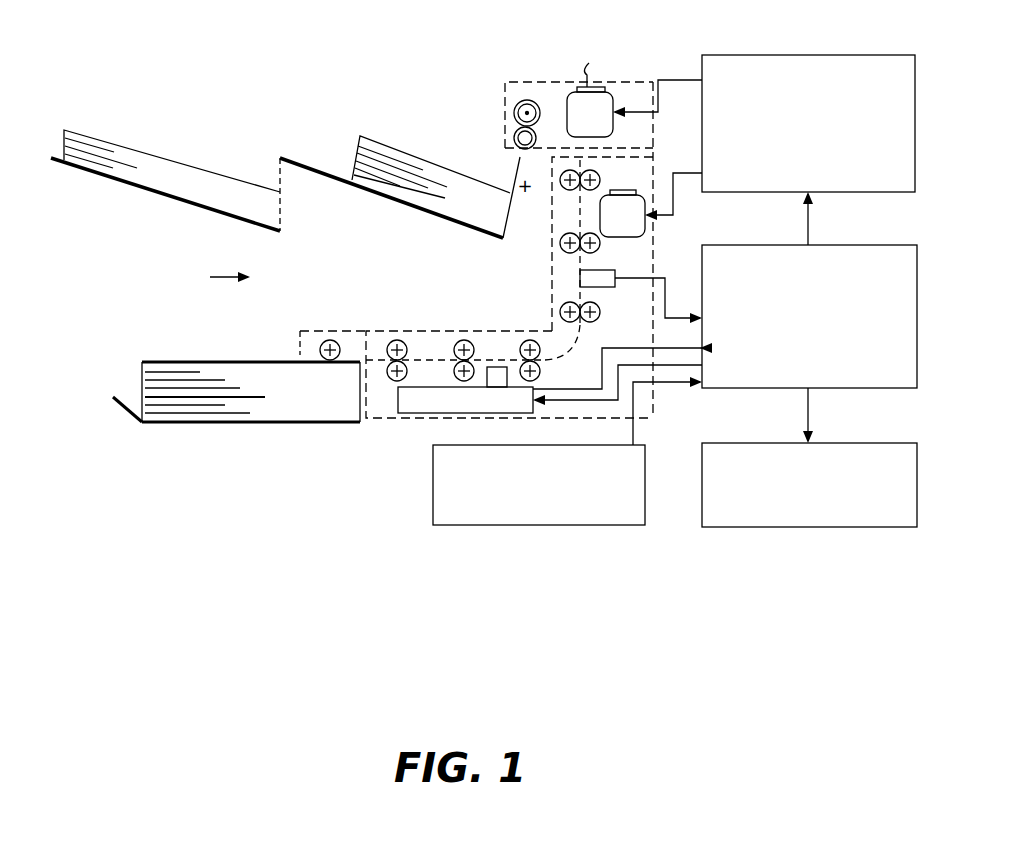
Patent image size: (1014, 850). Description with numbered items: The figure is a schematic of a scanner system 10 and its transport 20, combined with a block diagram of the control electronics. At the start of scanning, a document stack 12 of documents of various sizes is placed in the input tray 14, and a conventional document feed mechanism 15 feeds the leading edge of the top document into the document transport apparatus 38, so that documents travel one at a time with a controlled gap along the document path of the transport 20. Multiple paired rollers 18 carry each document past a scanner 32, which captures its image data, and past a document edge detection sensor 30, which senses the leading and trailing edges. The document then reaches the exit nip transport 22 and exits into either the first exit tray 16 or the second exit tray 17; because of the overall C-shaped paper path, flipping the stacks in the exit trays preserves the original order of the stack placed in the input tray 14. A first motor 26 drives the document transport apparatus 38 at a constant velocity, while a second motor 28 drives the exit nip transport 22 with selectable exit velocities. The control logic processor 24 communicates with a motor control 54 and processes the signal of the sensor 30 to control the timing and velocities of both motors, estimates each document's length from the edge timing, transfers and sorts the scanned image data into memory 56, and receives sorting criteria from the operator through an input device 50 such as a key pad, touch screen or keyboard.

The scanner system 10 is at (233, 74).
The document stack 12 is at (103, 139).
The input tray 14 is at (218, 424).
The document feed mechanism 15 is at (300, 331).
The first exit tray 16 is at (308, 158).
The second exit tray 17 is at (148, 191).
The paired rollers 18 is at (396, 374).
The transport 20 is at (214, 278).
The exit nip transport 22 is at (505, 103).
The control logic processor 24 is at (878, 245).
The first motor 26 is at (612, 238).
The second motor 28 is at (634, 87).
The document edge detection sensor 30 is at (580, 280).
The scanner 32 is at (410, 414).
The document transport apparatus 38 is at (424, 330).
The input device 50 is at (540, 526).
The motor control 54 is at (809, 55).
The memory 56 is at (872, 443).